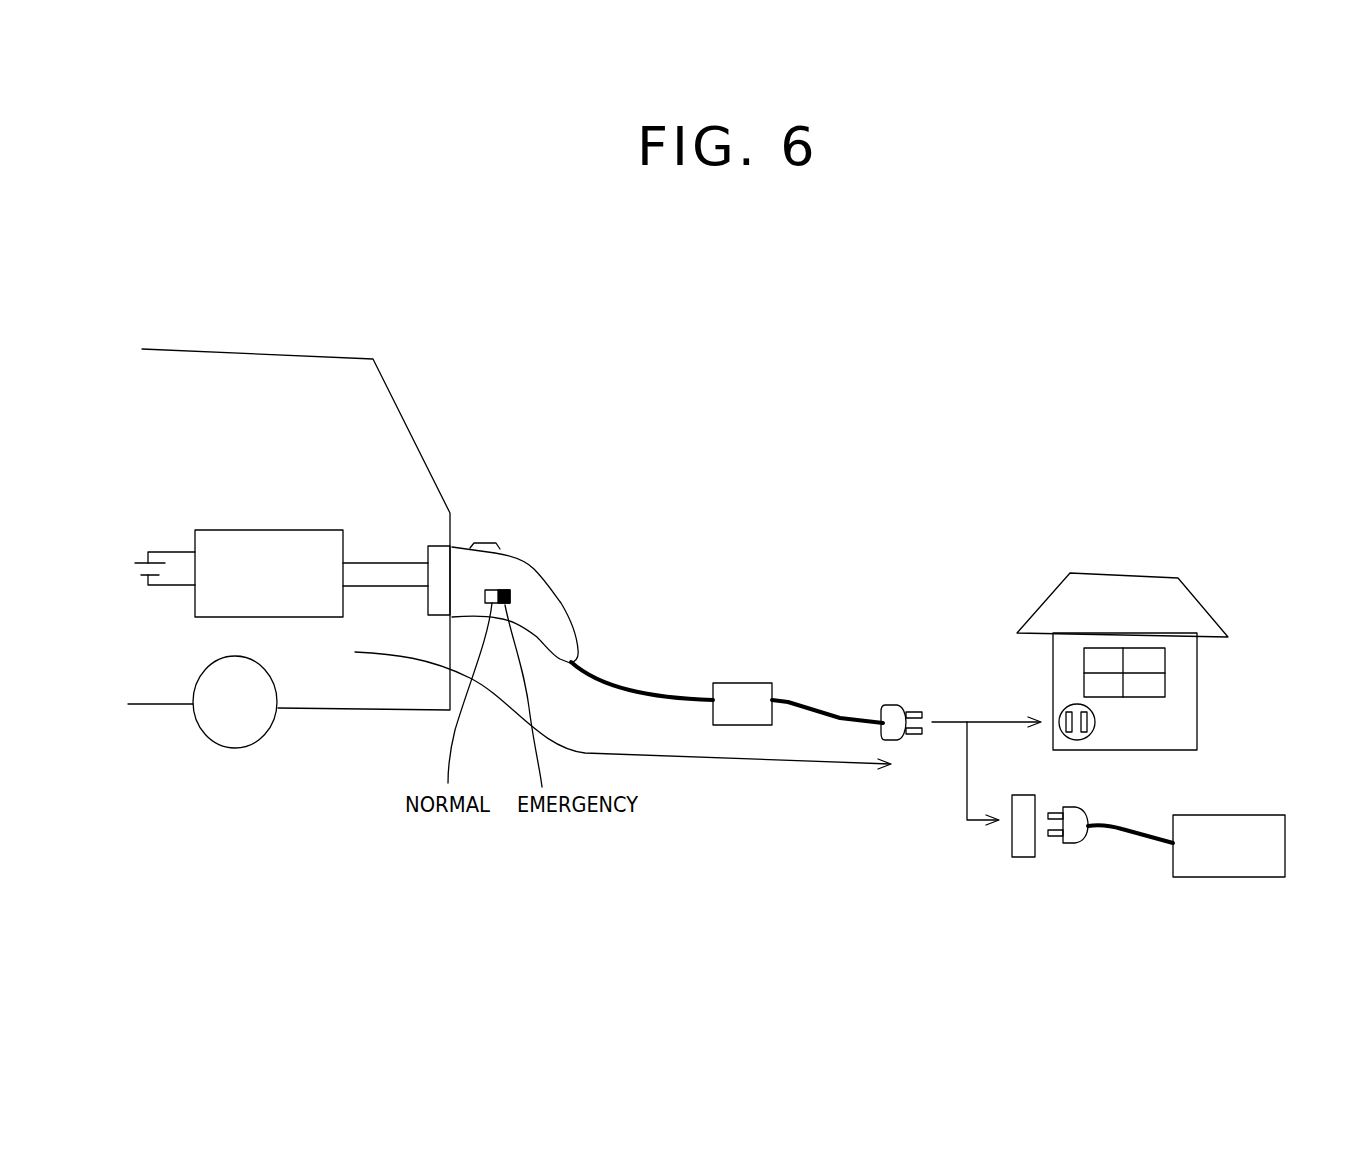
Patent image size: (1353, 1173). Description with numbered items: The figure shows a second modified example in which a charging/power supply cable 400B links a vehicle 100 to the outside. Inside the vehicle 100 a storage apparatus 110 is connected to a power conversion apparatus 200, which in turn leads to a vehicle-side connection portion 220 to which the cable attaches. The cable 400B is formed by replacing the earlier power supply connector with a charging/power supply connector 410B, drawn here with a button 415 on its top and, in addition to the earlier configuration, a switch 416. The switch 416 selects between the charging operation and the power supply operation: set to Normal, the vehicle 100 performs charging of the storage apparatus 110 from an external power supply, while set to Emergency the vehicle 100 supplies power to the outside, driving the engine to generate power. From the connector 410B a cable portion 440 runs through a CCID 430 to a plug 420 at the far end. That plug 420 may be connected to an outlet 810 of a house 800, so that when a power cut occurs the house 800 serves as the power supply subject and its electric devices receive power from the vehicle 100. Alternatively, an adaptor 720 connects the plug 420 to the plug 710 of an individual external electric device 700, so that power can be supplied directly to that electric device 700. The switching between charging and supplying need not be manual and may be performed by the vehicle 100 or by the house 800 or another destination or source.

The vehicle 100 is at (412, 437).
The storage apparatus 110 is at (141, 560).
The power conversion apparatus 200 is at (270, 530).
The inlet 220 is at (440, 543).
The charging/power supply cable 400B is at (661, 636).
The charging/power supply connector 410B is at (527, 565).
The operation button 415 is at (486, 545).
The switch 416 is at (513, 596).
The electric wire portion 440 is at (677, 693).
The CCID (charging circuit interrupt device) 430 is at (745, 683).
The plug 420 is at (895, 705).
The house 800 is at (1160, 577).
The outlet 810 is at (1095, 728).
The adaptor 720 is at (1022, 857).
The plug 710 is at (1077, 843).
The external electric device 700 is at (1228, 877).